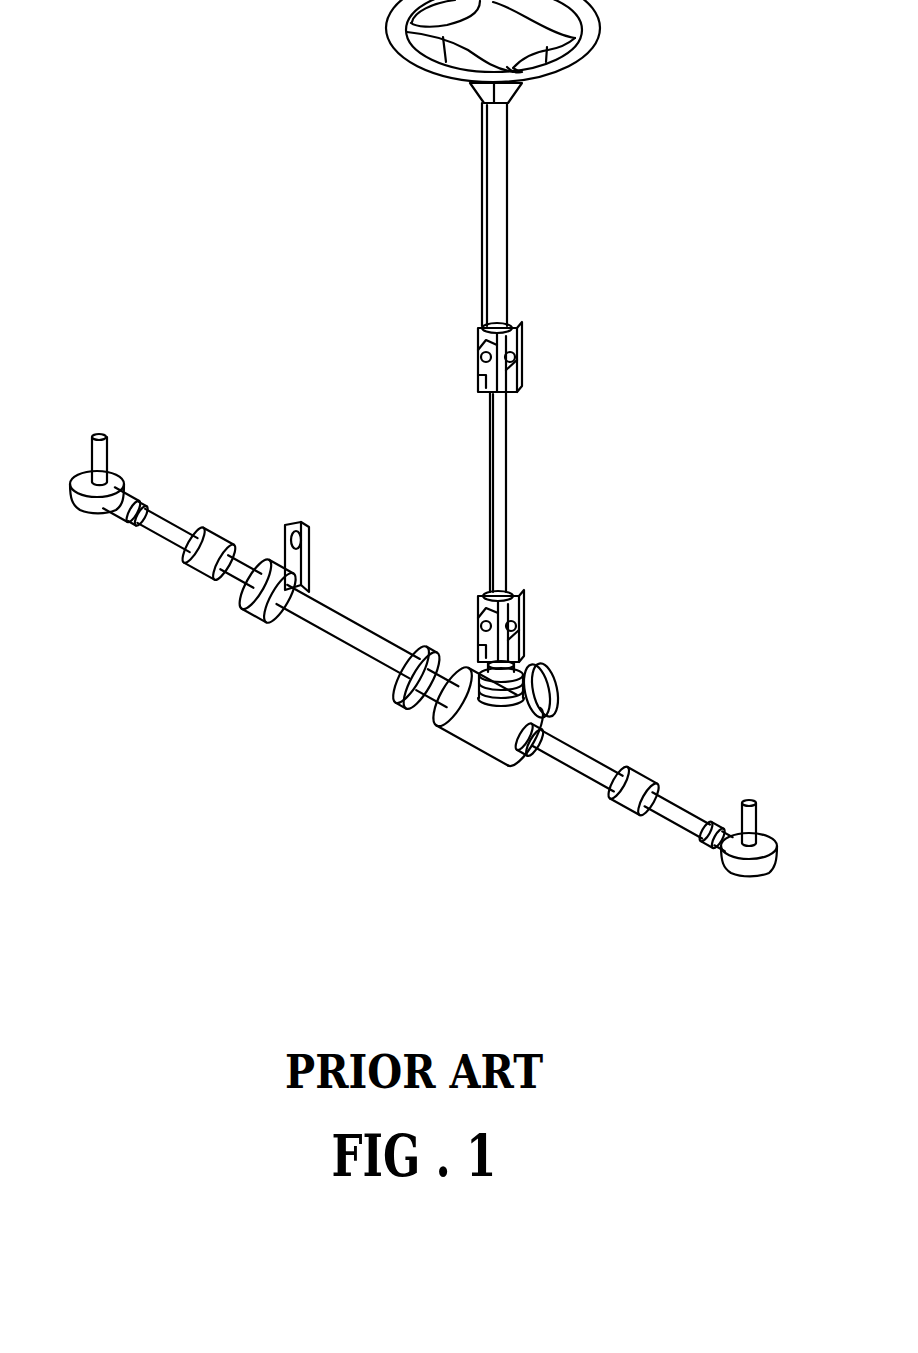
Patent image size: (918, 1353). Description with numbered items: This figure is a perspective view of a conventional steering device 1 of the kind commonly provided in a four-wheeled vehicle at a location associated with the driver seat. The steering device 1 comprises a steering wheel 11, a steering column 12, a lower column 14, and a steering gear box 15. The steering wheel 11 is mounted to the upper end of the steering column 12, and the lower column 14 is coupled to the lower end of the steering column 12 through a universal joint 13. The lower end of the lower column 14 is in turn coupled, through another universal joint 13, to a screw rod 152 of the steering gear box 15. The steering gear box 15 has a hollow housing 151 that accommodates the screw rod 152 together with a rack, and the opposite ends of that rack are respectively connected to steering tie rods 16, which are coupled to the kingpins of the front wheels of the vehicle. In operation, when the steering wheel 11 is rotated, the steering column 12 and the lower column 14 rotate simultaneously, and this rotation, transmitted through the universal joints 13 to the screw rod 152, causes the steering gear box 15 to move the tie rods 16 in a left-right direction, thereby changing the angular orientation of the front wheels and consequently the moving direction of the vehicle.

The steering device 1 is at (296, 219).
The steering wheel 11 is at (597, 22).
The steering column 12 is at (503, 205).
The universal joint 13 is at (518, 355).
The lower column 14 is at (506, 498).
The steering gear box 15 is at (463, 658).
The hollow housing 151 is at (498, 736).
The screw rod 152 is at (527, 667).
The steering tie rods 16 is at (162, 525).